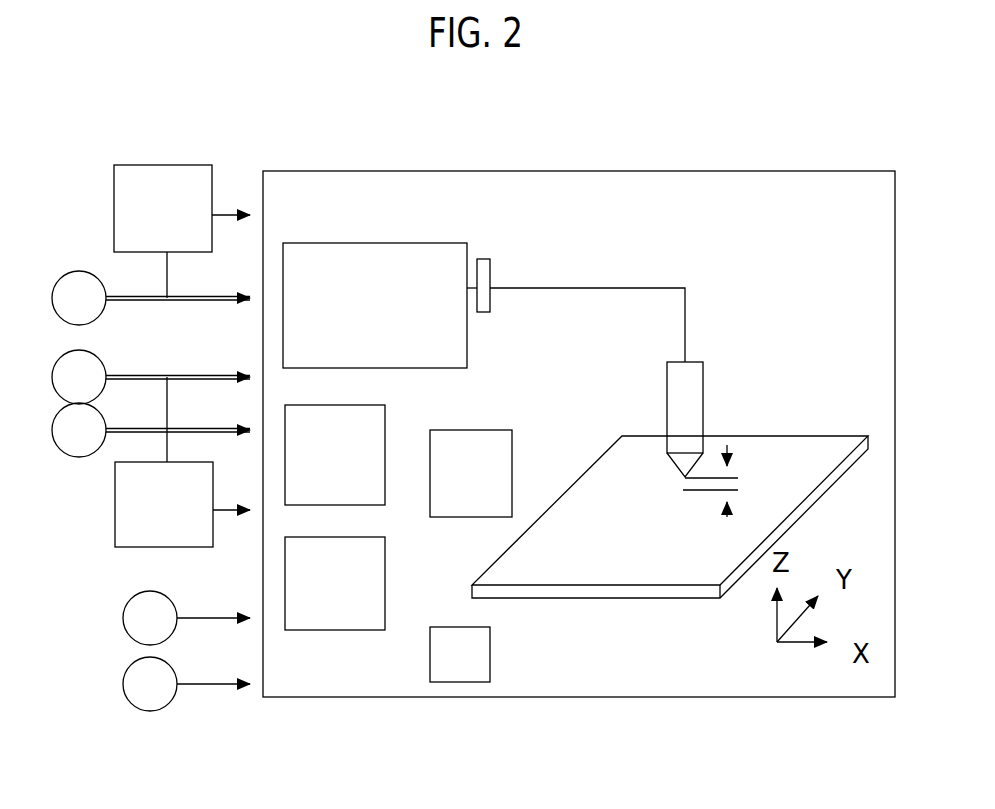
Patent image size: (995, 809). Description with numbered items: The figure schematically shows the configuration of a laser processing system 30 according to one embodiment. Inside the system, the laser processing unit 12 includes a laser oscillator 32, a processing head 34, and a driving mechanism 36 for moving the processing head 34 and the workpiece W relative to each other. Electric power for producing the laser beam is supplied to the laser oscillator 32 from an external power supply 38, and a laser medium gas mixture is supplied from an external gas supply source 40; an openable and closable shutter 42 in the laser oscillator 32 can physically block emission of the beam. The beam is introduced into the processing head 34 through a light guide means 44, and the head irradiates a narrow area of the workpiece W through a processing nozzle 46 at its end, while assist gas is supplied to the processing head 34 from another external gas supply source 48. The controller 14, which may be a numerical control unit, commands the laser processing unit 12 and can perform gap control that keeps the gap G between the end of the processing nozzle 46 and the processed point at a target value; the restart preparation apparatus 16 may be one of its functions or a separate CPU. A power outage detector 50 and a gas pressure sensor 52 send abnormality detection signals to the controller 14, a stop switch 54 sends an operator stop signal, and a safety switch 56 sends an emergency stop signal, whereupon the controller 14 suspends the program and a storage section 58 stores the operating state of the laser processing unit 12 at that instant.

The laser processing unit 12 is at (742, 272).
The controller 14 is at (385, 492).
The restart preparation apparatus 16 is at (350, 630).
The laser processing system 30 is at (740, 162).
The laser oscillator 32 is at (358, 243).
The processing head 34 is at (704, 397).
The driving mechanism 36 is at (473, 430).
The external power supply 38 is at (78, 271).
The external gas supply source 40 is at (100, 357).
The shutter 42 is at (492, 272).
The light guide means 44 is at (648, 288).
The processing nozzle 46 is at (683, 474).
The external gas supply source 48 is at (64, 457).
The power outage detector 50 is at (186, 165).
The gas pressure sensor 52 is at (115, 530).
The stop switch 54 is at (123, 622).
The safety switch 56 is at (123, 690).
The storage section 58 is at (492, 655).
The workpiece W is at (652, 600).
The gap G is at (722, 481).